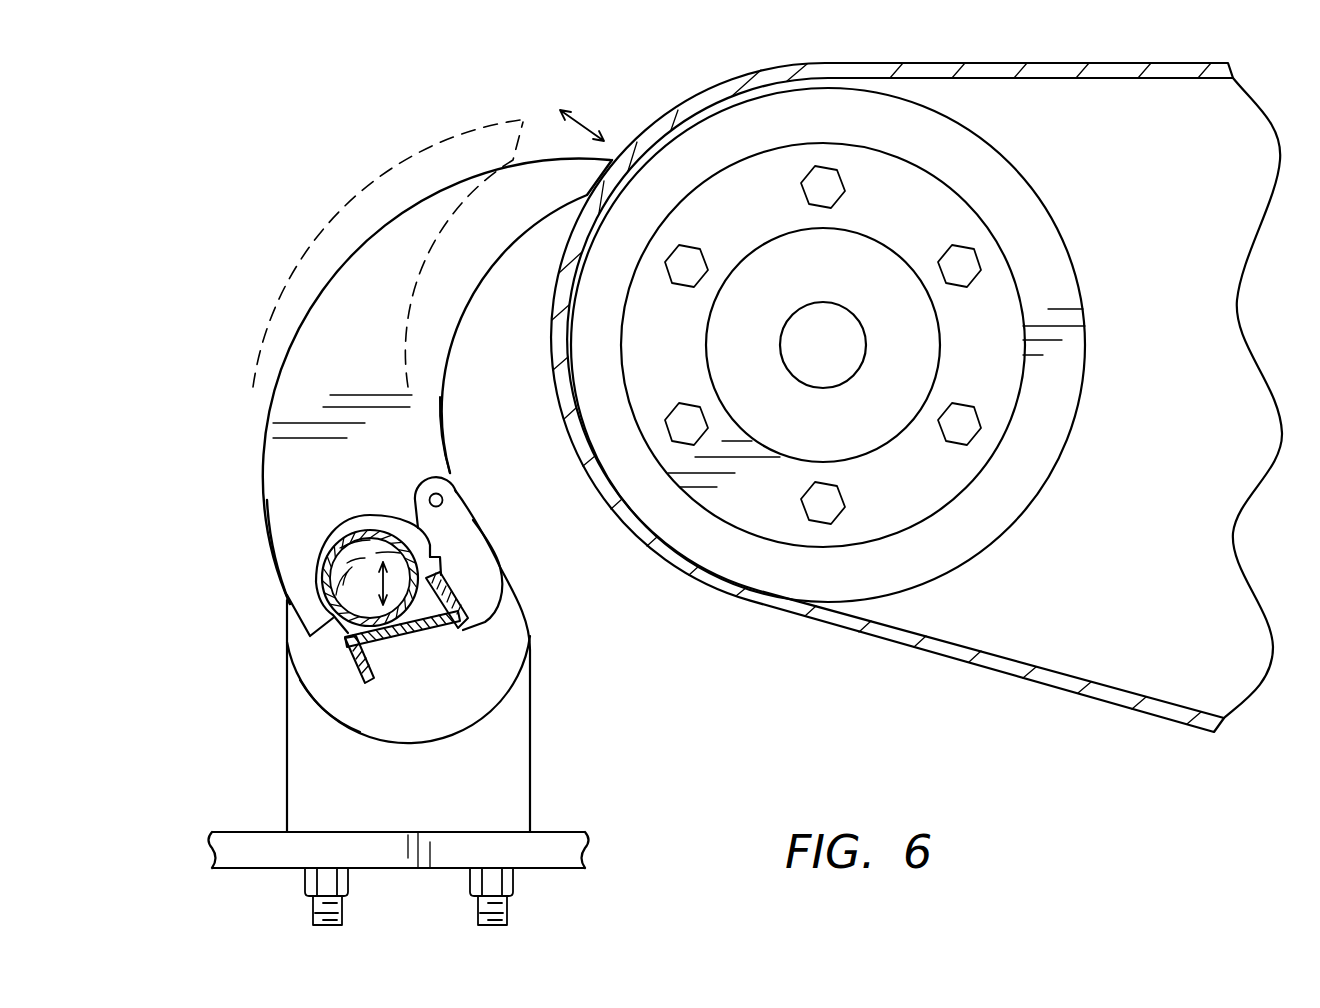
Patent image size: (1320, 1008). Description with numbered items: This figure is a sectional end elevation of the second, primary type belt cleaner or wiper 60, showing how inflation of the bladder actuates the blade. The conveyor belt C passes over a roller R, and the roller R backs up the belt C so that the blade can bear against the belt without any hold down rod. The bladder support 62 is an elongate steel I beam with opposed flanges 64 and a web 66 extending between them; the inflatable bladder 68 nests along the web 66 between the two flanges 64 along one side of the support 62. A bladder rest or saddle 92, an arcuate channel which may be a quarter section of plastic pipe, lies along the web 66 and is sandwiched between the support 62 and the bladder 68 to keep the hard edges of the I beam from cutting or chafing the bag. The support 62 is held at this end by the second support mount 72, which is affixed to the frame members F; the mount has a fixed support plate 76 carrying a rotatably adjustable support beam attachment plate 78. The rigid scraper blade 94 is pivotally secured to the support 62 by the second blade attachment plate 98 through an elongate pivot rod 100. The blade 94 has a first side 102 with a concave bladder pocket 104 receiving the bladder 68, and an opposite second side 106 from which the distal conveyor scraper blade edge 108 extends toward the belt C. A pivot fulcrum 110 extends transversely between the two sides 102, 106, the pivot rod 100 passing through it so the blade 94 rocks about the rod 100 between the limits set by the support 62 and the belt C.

The belt cleaner or wiper 60 is at (684, 704).
The bladder support 62 is at (353, 708).
The flanges 64 is at (380, 668).
The web 66 is at (388, 640).
The inflatable bladder 68 is at (336, 548).
The second support mount 72 is at (533, 775).
The fixed support plate 76 is at (453, 821).
The support beam attachment plate 78 is at (512, 693).
The bladder rest or saddle 92 is at (300, 650).
The scraper blade 94 is at (292, 343).
The second blade attachment plate 98 is at (500, 574).
The pivot rod 100 is at (443, 500).
The first side 102 is at (272, 584).
The concave bladder pocket 104 is at (372, 520).
The second side 106 is at (466, 180).
The conveyor scraper blade edge 108 is at (604, 158).
The pivot fulcrum 110 is at (447, 468).
The roller R is at (1010, 530).
The conveyor belt C is at (1085, 703).
The frame members F is at (588, 838).